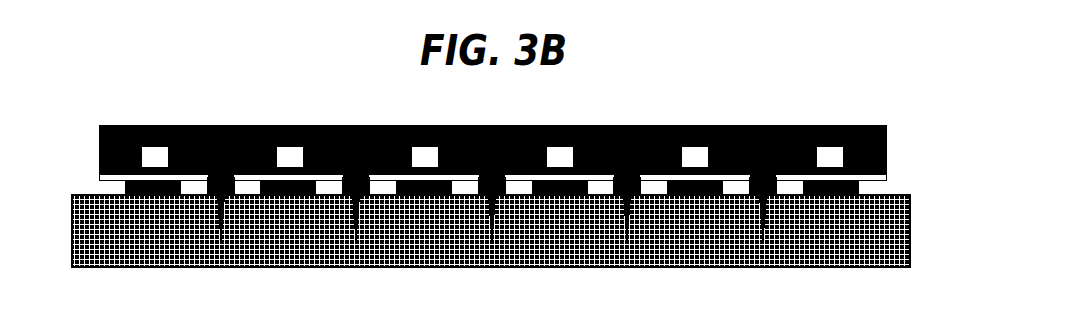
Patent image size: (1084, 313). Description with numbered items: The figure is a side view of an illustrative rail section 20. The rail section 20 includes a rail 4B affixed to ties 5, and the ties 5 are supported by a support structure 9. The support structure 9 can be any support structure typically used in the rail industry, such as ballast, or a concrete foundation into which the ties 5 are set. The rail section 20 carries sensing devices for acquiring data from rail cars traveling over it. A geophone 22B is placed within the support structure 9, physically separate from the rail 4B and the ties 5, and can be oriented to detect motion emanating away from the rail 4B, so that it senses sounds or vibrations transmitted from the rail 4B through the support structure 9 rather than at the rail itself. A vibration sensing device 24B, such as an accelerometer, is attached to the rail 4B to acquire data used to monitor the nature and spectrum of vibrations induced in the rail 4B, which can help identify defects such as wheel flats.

The rail section 20 is at (131, 112).
The rail 4B is at (835, 130).
The vibration sensing device 24B is at (288, 153).
The geophone 22B is at (355, 168).
The ties 5 is at (562, 187).
The support structure 9 is at (699, 213).